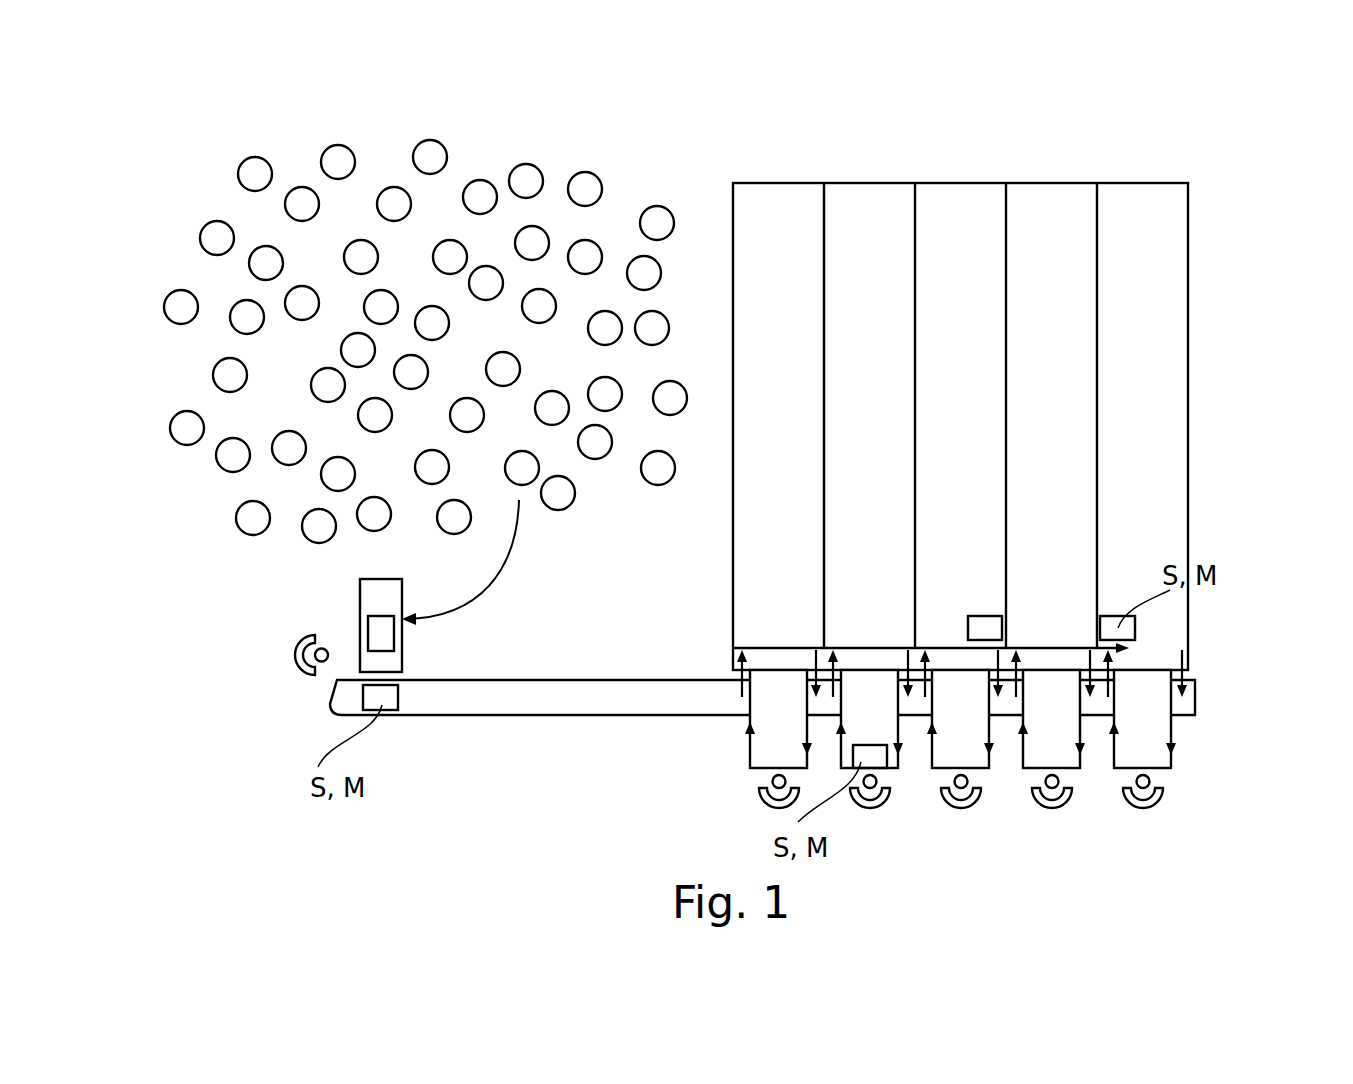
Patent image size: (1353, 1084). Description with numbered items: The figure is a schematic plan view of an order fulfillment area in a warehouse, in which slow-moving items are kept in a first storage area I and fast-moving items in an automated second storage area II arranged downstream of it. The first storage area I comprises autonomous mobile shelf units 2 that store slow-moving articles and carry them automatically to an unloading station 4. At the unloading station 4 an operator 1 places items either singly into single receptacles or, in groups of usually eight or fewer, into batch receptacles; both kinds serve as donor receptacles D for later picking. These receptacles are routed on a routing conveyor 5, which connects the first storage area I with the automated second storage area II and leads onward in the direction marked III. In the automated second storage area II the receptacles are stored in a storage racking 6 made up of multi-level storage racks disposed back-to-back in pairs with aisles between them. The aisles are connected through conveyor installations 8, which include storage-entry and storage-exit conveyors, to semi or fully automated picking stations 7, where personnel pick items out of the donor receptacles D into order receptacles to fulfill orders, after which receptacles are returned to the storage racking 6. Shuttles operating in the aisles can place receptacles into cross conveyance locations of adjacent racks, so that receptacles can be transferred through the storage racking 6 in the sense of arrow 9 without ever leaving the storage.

The operator 1 is at (282, 655).
The autonomous mobile shelf units 2 is at (430, 160).
The unloading station 4 is at (436, 649).
The routing conveyor 5 is at (1190, 688).
The storage racking 6 is at (1162, 272).
The picking station 7 is at (896, 787).
The conveyor installations 8 is at (1180, 755).
The arrow 9 is at (1050, 636).
The donor receptacle D is at (990, 623).
The first storage area I is at (160, 205).
The automated second storage area II is at (1205, 485).
The output direction III is at (1197, 698).